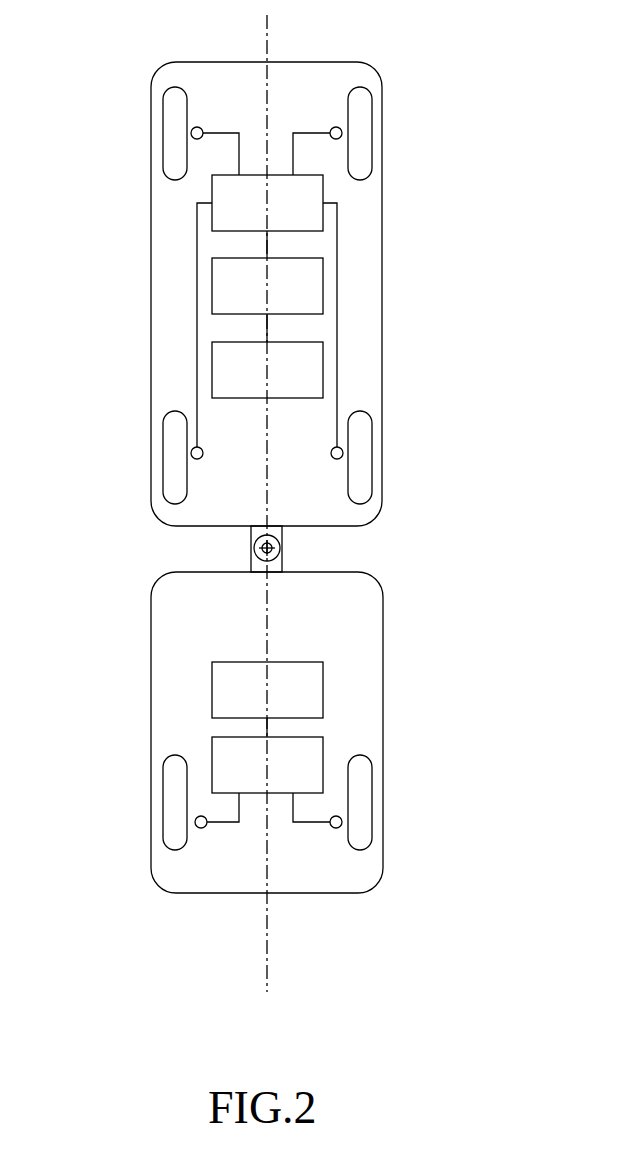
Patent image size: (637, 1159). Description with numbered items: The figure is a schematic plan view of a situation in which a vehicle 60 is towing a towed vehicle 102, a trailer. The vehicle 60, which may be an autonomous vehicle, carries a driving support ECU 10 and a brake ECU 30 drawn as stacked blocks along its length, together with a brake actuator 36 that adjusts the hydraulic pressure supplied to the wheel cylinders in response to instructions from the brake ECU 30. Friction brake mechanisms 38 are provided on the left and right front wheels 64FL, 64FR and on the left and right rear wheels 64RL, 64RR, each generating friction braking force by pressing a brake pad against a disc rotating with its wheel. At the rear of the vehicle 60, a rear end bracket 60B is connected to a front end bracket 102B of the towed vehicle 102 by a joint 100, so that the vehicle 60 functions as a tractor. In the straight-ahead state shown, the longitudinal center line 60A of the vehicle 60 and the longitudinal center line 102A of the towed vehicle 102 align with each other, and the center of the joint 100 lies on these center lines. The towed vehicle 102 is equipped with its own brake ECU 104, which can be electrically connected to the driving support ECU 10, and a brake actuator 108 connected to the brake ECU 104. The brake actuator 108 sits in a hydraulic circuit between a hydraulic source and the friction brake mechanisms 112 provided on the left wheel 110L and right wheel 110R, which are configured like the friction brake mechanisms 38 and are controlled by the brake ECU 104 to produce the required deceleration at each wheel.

The driving support ECU 10 is at (267, 370).
The brake ECU 30 is at (267, 286).
The brake actuator 36 is at (267, 203).
The friction brake mechanism 38 is at (202, 128).
The vehicle 60 is at (382, 305).
The longitudinal center line 60A is at (268, 46).
The rear end bracket 60B is at (257, 528).
The left front wheel 64FL is at (163, 139).
The right front wheel 64FR is at (373, 125).
The left rear wheel 64RL is at (163, 440).
The right rear wheel 64RR is at (373, 440).
The joint 100 is at (305, 541).
The towed vehicle 102 is at (383, 639).
The longitudinal center line 102A is at (265, 947).
The front end bracket 102B is at (262, 565).
The brake ECU 104 is at (267, 690).
The brake actuator 108 is at (267, 765).
The left wheel 110L is at (163, 791).
The right wheel 110R is at (373, 793).
The friction brake mechanism 112 is at (203, 828).